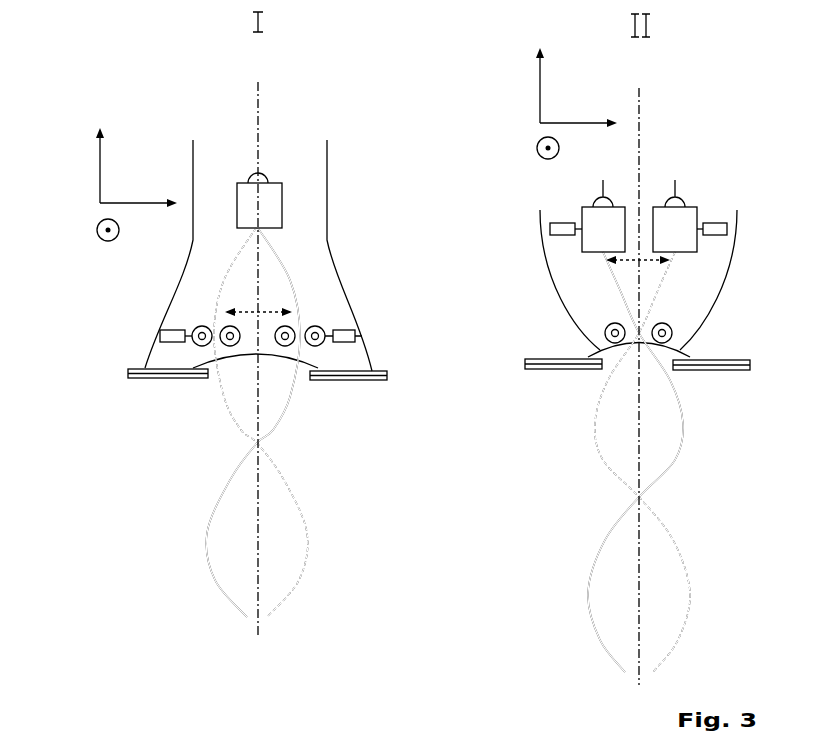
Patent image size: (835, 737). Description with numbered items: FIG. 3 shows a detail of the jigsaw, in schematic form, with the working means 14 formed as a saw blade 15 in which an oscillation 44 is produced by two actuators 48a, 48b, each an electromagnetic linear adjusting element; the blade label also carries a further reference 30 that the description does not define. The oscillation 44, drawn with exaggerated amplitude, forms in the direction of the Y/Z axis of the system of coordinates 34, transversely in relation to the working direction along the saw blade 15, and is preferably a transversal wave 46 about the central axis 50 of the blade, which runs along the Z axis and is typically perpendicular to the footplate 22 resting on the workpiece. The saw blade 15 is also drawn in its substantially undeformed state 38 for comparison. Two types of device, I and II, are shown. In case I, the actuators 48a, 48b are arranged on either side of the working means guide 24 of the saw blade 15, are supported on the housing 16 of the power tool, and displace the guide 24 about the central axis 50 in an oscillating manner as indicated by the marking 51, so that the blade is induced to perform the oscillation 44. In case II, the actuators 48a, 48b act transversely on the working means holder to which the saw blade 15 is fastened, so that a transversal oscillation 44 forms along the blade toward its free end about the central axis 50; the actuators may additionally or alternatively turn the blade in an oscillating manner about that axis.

The working means 14 is at (448, 450).
The saw blade 15 is at (448, 450).
The helical section 30 is at (448, 450).
The oscillation 44 is at (448, 450).
The transversal wave 46 is at (298, 495).
The housing 16 is at (327, 203).
The footplate 22 is at (357, 380).
The working means guide 24 is at (325, 348).
The system of coordinates 34 is at (98, 206).
The undeformed state 38 is at (282, 195).
The actuator 48a is at (343, 328).
The actuator 48b is at (173, 328).
The central axis 50 is at (258, 113).
The marking 51 is at (292, 283).